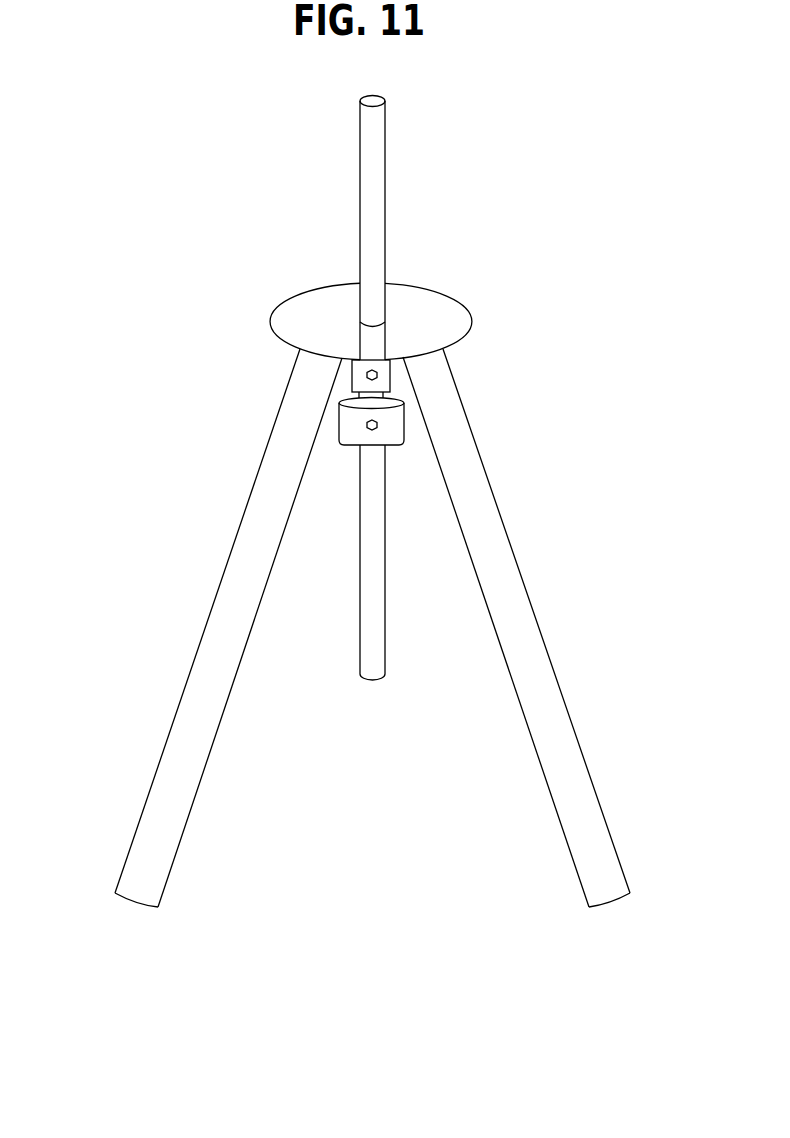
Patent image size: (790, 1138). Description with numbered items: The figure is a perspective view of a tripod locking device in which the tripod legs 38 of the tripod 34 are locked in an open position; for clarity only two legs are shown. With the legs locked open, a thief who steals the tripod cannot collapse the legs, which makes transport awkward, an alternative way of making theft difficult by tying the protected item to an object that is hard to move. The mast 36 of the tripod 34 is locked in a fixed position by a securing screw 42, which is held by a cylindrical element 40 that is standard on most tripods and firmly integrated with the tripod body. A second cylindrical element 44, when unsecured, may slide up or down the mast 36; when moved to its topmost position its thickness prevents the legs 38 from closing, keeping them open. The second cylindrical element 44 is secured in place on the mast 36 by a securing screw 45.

The tripod 34 is at (361, 502).
The mast 36 is at (370, 177).
The tripod legs 38 is at (225, 605).
The cylindrical element 40 is at (348, 366).
The securing screw 42 is at (392, 362).
The second cylindrical element 44 is at (347, 425).
The securing screw 45 is at (388, 424).